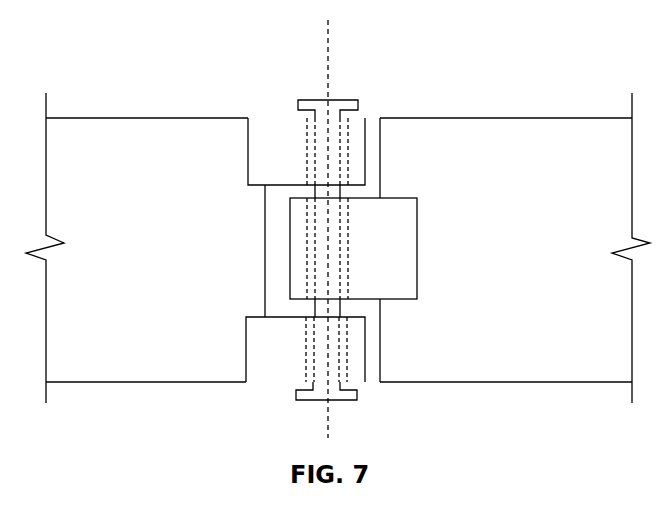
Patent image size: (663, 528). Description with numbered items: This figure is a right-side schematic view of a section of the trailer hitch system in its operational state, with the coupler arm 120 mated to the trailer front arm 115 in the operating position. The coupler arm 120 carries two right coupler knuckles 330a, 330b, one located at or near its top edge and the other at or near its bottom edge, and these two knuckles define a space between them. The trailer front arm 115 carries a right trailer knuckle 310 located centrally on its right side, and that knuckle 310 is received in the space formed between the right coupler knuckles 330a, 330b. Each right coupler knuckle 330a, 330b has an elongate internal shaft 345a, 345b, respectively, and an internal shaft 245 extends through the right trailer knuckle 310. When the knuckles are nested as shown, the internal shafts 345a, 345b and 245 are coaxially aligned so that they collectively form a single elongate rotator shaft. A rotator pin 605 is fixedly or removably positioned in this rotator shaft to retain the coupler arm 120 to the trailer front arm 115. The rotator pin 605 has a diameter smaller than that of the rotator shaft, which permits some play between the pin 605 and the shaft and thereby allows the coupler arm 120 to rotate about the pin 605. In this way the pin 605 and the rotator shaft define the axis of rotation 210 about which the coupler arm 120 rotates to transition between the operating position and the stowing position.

The coupler arm 120 is at (95, 131).
The trailer front arm 115 is at (463, 131).
The right coupler knuckle 330a is at (262, 149).
The right coupler knuckle 330b is at (262, 336).
The right trailer knuckle 310 is at (398, 245).
The rotator pin 605 is at (340, 98).
The axis of rotation 210 is at (330, 34).
The internal shaft 345a is at (306, 158).
The internal shaft 345b is at (300, 365).
The internal shaft 245 is at (348, 277).